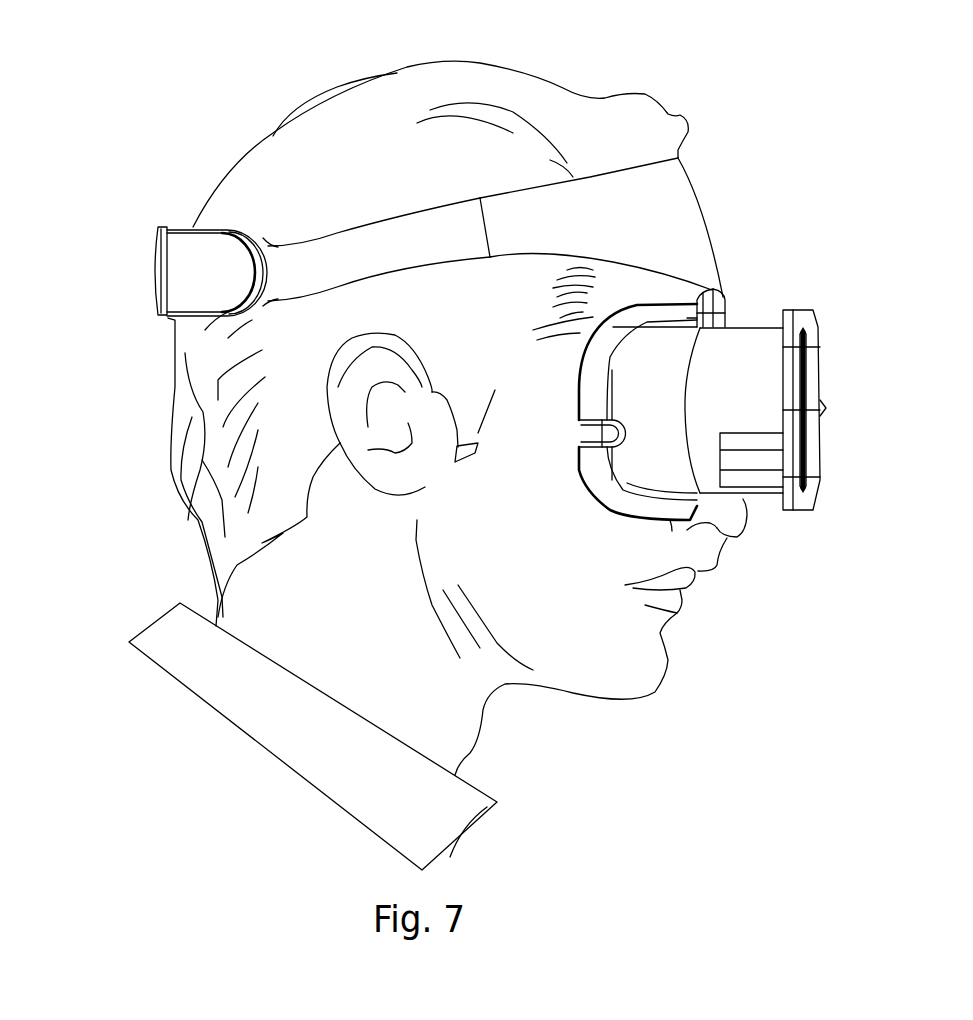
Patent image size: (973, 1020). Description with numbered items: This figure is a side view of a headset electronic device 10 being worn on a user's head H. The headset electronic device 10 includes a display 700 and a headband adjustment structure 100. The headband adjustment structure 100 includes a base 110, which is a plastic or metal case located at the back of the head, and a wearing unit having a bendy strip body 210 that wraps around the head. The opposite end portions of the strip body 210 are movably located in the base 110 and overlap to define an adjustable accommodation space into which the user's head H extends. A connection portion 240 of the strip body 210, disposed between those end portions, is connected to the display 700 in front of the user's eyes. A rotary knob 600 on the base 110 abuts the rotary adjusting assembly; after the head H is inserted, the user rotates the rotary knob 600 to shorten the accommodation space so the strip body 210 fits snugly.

The headset electronic device 10 is at (953, 58).
The user's head H is at (377, 97).
The headband adjustment structure 100 is at (691, 182).
The base 110 is at (187, 240).
The strip body 210 is at (582, 190).
The connection portion 240 is at (712, 297).
The rotary knob 600 is at (157, 267).
The display 700 is at (807, 313).